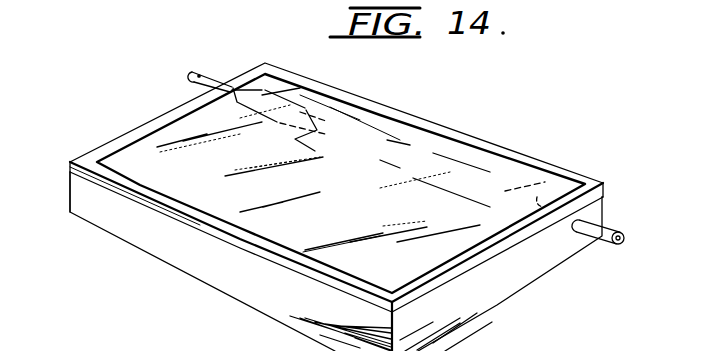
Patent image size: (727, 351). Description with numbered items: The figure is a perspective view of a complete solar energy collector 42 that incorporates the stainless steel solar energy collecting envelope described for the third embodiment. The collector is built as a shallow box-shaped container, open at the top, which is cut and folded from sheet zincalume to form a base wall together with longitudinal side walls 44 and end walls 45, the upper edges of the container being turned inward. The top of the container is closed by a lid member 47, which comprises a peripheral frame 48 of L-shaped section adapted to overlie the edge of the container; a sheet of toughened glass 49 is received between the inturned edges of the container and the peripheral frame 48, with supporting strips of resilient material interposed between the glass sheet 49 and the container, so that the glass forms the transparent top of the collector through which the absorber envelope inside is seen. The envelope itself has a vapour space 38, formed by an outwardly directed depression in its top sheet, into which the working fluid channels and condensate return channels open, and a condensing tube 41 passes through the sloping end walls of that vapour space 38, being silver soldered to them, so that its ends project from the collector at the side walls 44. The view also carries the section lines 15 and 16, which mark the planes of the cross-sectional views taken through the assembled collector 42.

The section line 15- 15 is at (425, 105).
The section line 16- 16 is at (194, 74).
The vapour space 38 is at (538, 170).
The condensing tube 41 is at (621, 232).
The complete solar energy collector 42 is at (522, 139).
The longitudinal side walls 44 is at (293, 297).
The end walls 45 is at (71, 194).
The lid member 47 is at (398, 108).
The peripheral frame 48 is at (350, 100).
The sheet of toughened glass 49 is at (403, 223).